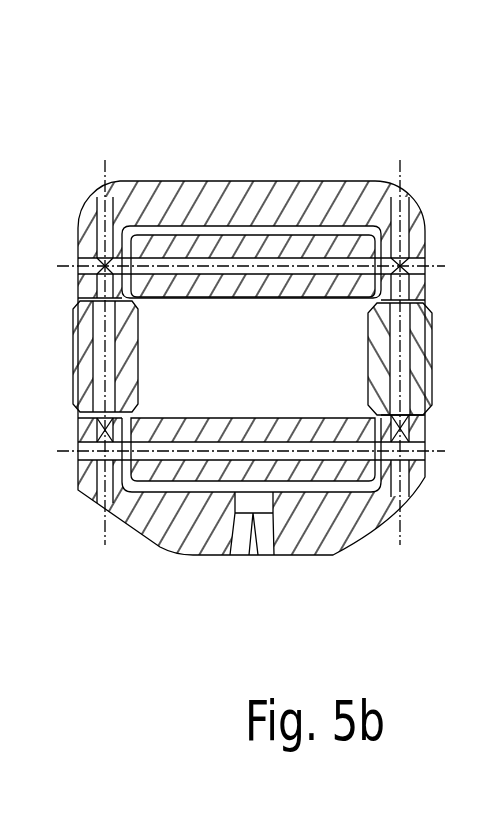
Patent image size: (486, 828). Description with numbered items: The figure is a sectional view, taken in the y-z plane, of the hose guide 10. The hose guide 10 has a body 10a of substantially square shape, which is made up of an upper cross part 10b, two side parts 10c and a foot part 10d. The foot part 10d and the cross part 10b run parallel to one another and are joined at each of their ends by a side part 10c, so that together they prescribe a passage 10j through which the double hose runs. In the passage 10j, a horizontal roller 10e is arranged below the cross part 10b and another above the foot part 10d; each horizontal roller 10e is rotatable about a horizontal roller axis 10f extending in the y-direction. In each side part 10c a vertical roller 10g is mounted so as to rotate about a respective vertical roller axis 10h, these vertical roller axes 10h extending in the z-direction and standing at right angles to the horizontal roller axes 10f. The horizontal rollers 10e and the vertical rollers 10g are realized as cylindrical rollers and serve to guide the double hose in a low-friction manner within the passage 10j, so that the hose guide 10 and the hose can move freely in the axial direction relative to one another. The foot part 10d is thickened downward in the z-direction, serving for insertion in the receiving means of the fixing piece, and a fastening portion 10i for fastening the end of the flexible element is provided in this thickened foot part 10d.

The hose guide 10 is at (372, 178).
The body 10a is at (200, 181).
The upper cross part 10b is at (293, 205).
The side part 10c is at (417, 232).
The foot part 10d is at (308, 525).
The horizontal roller 10e is at (166, 428).
The horizontal roller axis 10f is at (70, 259).
The vertical roller 10g is at (418, 343).
The vertical roller axis 10h is at (105, 532).
The fastening portion 10i is at (257, 567).
The passage 10j is at (188, 365).